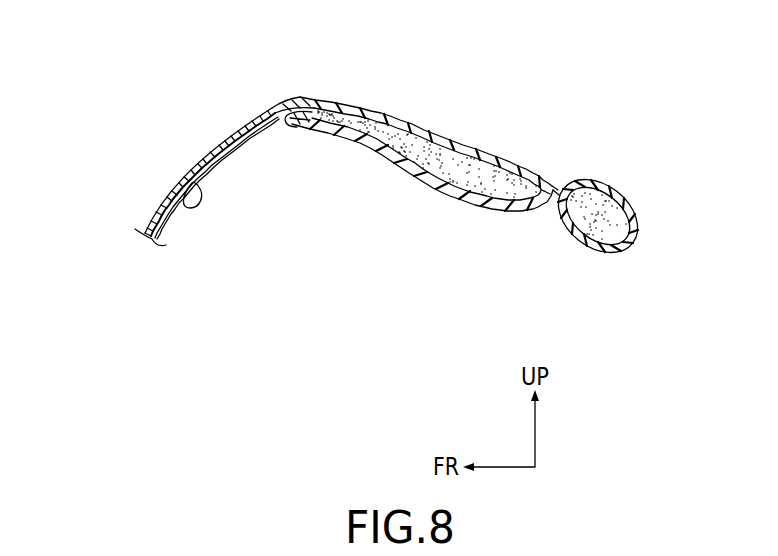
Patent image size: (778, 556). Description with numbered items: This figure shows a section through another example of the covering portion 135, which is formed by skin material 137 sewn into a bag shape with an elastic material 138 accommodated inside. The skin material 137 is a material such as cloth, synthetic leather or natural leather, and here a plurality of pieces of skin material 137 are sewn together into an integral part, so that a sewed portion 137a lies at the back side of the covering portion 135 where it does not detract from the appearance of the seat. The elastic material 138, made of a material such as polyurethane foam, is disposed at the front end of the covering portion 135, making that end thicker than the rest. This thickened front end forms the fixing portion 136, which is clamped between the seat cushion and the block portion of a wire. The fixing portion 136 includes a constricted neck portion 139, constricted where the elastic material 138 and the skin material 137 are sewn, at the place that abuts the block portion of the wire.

The covering portion 135 is at (266, 96).
The fixing portion 136 is at (611, 254).
The skin material 137 is at (207, 153).
The sewed portion 137a is at (300, 140).
The elastic material 138 is at (465, 172).
The constricted neck portion 139 is at (556, 187).